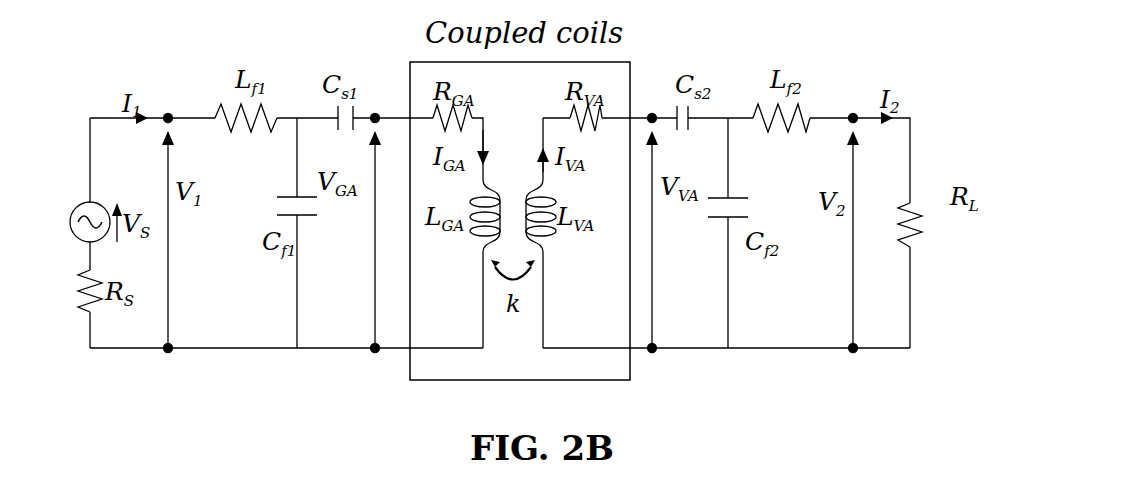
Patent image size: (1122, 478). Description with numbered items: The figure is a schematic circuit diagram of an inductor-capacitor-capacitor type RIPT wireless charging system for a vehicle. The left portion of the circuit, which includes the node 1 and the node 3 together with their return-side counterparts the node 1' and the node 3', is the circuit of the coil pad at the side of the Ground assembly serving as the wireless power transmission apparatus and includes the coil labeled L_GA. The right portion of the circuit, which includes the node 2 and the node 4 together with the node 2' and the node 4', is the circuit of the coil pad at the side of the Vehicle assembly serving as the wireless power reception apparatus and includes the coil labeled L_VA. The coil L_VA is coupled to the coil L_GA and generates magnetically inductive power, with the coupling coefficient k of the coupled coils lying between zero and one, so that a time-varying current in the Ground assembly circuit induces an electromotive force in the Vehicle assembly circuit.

The node 1 is at (168, 104).
The input port node 1' is at (172, 369).
The node 2 is at (853, 104).
The output port node 2' is at (857, 369).
The node 3 is at (376, 104).
The generator-side coil port node 3' is at (377, 369).
The node 4 is at (651, 104).
The vehicle-side coil port node 4' is at (655, 369).